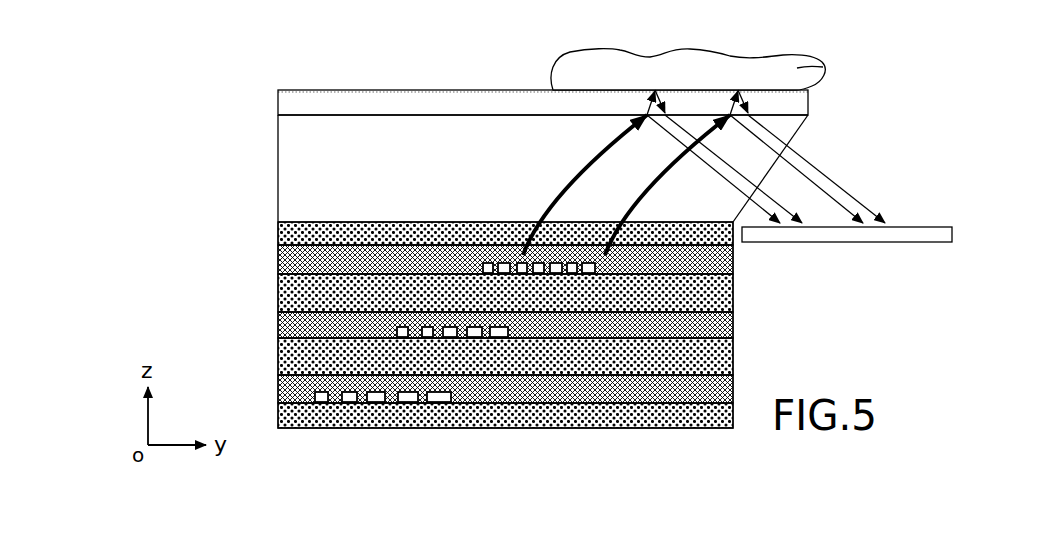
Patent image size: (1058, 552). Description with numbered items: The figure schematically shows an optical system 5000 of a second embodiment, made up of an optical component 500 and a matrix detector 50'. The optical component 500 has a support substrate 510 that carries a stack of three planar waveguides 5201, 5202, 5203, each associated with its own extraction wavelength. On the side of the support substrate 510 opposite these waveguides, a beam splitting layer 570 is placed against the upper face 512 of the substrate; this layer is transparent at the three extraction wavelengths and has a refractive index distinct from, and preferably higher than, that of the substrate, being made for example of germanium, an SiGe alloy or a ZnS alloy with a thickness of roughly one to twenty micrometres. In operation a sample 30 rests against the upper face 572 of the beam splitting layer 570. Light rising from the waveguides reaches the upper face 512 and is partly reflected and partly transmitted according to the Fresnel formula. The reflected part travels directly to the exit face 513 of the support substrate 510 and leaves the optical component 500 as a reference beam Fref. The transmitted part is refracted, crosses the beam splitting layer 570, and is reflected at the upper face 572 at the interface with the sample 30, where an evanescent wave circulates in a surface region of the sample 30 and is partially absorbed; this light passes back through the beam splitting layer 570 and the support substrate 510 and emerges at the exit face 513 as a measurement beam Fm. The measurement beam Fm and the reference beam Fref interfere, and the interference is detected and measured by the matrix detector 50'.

The optical system 5000 is at (150, 134).
The optical component 500 is at (243, 117).
The support substrate 510 is at (290, 162).
The upper face of the support substrate 512 is at (405, 113).
The exit face of the support substrate 513 is at (797, 135).
The beam splitting layer 570 is at (313, 98).
The upper face of the beam splitting layer 572 is at (343, 90).
The planar waveguide 5203 is at (270, 245).
The planar waveguide 5202 is at (270, 312).
The planar waveguide 5201 is at (270, 375).
The sample 30 is at (827, 63).
The matrix detector 50' is at (847, 268).
The measurement beam Fm is at (773, 197).
The reference beam Fref is at (848, 214).